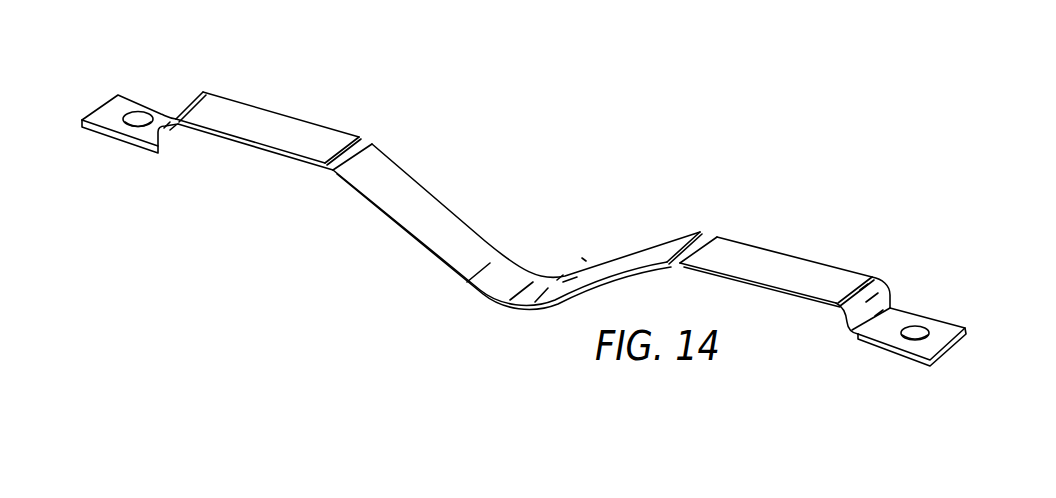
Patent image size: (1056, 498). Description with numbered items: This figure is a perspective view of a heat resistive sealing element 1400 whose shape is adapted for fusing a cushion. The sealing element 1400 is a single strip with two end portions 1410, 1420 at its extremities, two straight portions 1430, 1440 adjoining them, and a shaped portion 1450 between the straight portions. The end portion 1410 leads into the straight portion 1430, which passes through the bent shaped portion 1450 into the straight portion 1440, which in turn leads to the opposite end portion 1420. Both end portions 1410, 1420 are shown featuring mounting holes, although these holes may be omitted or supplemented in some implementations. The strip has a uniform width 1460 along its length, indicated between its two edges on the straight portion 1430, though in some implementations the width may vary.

The sealing element 1400 is at (541, 197).
The end portion 1410 is at (118, 105).
The end portion 1420 is at (940, 328).
The straight portion 1430 is at (243, 113).
The straight portion 1440 is at (787, 263).
The shaped portion 1450 is at (445, 220).
The width 1460 is at (208, 172).